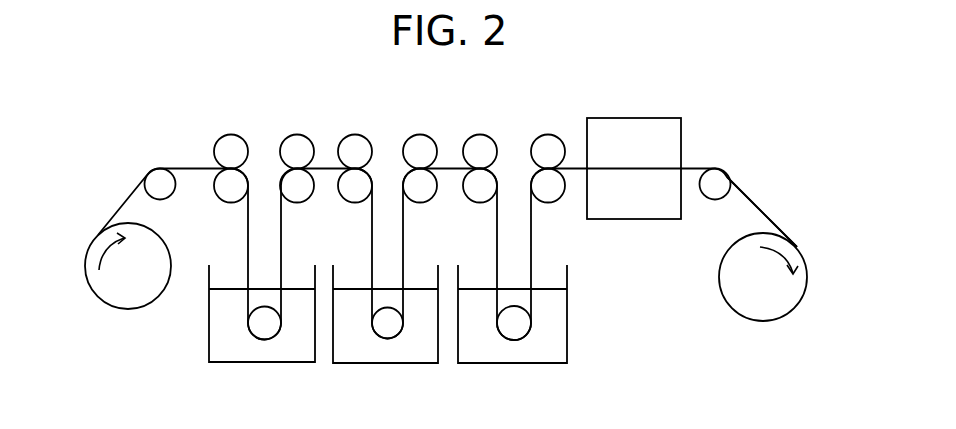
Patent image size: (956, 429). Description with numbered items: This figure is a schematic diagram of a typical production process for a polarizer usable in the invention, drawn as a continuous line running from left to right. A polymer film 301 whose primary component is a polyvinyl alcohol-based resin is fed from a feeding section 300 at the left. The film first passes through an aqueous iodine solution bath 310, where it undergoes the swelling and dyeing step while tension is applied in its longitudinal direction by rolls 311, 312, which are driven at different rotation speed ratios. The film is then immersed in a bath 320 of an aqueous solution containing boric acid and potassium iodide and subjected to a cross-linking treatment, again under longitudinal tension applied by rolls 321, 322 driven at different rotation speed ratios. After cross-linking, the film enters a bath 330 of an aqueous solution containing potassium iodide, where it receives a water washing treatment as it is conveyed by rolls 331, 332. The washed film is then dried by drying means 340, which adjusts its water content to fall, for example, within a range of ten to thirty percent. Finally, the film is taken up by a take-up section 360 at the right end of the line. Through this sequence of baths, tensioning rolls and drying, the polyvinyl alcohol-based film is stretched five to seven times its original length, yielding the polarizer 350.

The feeding section 300 is at (106, 286).
The polymer film 301 is at (122, 205).
The aqueous iodine solution bath 310 is at (262, 352).
The roll 311 is at (233, 151).
The roll 312 is at (296, 151).
The bath of aqueous solution containing boric acid and potassium iodide 320 is at (397, 352).
The roll 321 is at (353, 151).
The roll 322 is at (420, 151).
The bath of aqueous solution containing potassium iodide 330 is at (515, 352).
The roll 331 is at (478, 151).
The roll 332 is at (547, 151).
The drying means 340 is at (630, 138).
The polarizer 350 is at (758, 207).
The take-up section 360 is at (785, 297).